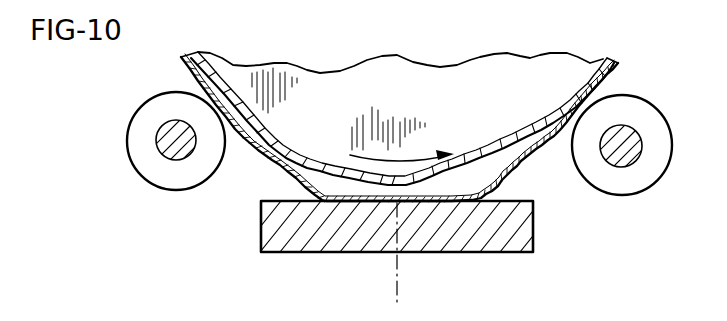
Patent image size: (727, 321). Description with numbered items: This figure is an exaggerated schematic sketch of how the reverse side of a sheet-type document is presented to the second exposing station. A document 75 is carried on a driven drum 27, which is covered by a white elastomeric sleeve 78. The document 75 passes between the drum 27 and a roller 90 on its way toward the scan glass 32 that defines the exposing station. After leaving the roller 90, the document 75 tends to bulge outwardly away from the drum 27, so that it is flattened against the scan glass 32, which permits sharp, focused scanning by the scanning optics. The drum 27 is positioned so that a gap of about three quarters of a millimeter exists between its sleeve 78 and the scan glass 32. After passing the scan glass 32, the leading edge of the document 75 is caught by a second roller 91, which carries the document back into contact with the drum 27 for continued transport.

The drum 27 is at (434, 102).
The white elastomeric sleeve 78 is at (566, 105).
The document 75 is at (523, 164).
The scan glass 32 is at (458, 243).
The roller 90 is at (128, 138).
The roller 91 is at (646, 184).